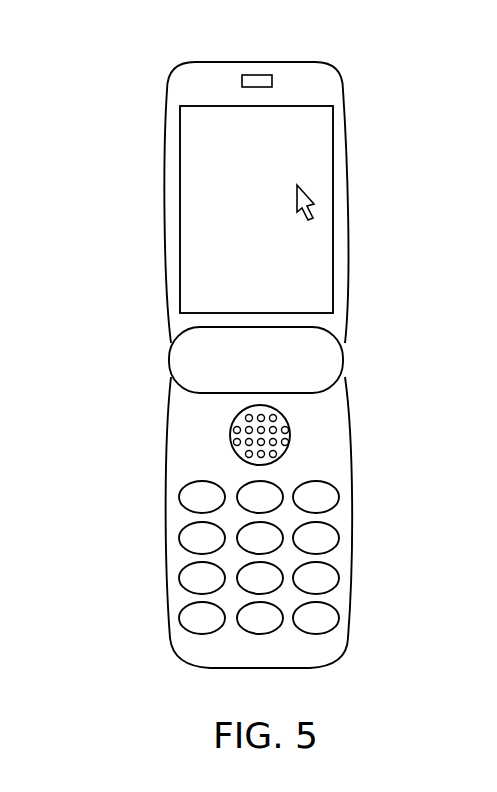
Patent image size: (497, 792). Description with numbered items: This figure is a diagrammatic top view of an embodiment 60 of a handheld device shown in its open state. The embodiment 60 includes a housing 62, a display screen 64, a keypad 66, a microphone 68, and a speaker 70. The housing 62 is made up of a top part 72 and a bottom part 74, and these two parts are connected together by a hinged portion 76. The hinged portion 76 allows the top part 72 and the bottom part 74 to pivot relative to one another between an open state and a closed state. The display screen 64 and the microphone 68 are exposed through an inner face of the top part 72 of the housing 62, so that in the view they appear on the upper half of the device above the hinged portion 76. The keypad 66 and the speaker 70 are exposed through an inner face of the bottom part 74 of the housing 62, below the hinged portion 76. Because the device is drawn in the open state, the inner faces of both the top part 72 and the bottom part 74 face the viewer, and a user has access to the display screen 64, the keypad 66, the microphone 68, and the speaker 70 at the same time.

The handheld device embodiment 60 is at (235, 336).
The housing 62 is at (352, 250).
The display screen 64 is at (268, 163).
The keypad 66 is at (339, 514).
The microphone 68 is at (255, 75).
The speaker 70 is at (293, 435).
The top part 72 is at (167, 213).
The bottom part 74 is at (167, 475).
The hinged portion 76 is at (170, 361).